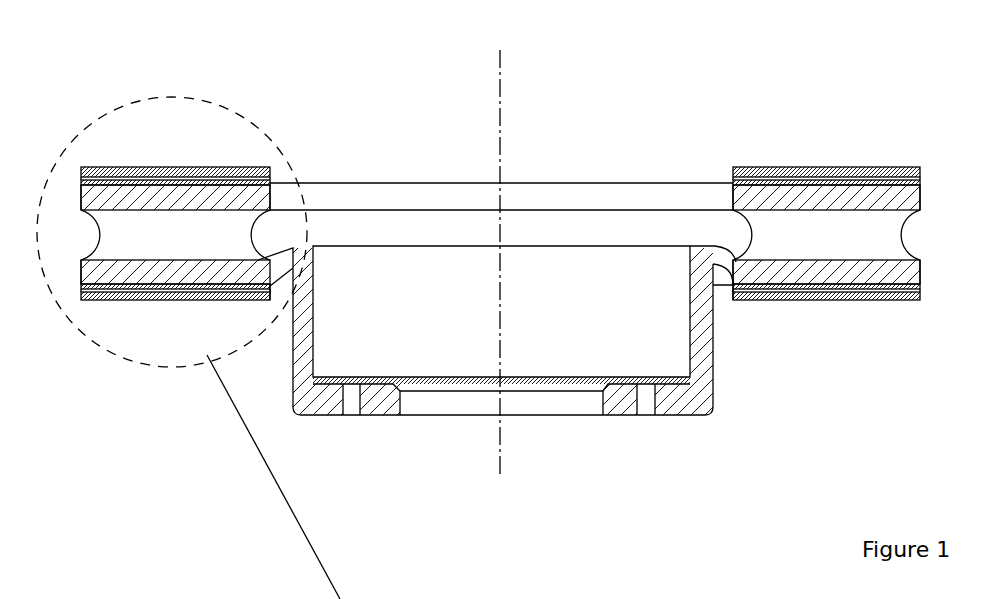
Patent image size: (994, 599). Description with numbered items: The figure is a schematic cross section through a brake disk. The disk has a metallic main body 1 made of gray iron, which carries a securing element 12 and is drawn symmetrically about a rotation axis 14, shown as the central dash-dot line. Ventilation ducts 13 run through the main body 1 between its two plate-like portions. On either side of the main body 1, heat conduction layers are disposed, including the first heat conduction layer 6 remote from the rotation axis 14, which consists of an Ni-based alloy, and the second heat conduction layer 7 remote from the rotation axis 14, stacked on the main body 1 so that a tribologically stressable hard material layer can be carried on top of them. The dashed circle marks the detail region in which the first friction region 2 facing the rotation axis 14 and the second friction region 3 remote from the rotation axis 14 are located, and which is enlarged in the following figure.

The metallic main body 1 is at (248, 190).
The first friction region facing a rotating axis 2 is at (262, 314).
The second friction region remote from a rotating axis 3 is at (262, 144).
The first heat conduction layer remote from a rotating axis 6 is at (170, 178).
The second heat conduction layer remote from a rotating axis 7 is at (103, 172).
The securing element 12 is at (620, 392).
The ventilation ducts 13 is at (232, 228).
The rotation axis 14 is at (494, 133).